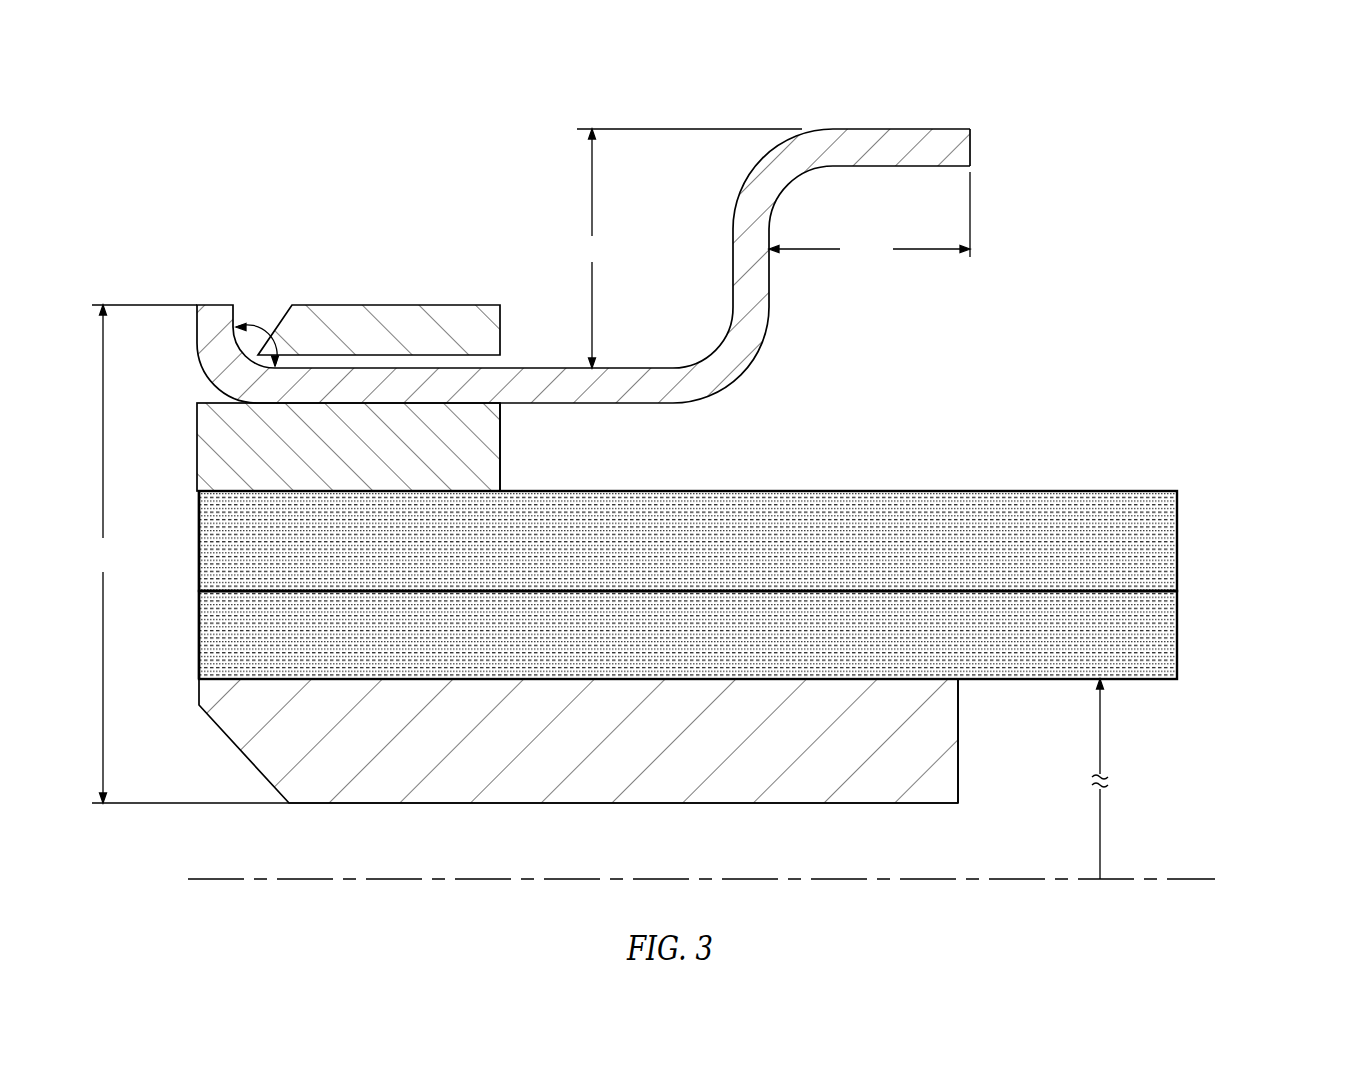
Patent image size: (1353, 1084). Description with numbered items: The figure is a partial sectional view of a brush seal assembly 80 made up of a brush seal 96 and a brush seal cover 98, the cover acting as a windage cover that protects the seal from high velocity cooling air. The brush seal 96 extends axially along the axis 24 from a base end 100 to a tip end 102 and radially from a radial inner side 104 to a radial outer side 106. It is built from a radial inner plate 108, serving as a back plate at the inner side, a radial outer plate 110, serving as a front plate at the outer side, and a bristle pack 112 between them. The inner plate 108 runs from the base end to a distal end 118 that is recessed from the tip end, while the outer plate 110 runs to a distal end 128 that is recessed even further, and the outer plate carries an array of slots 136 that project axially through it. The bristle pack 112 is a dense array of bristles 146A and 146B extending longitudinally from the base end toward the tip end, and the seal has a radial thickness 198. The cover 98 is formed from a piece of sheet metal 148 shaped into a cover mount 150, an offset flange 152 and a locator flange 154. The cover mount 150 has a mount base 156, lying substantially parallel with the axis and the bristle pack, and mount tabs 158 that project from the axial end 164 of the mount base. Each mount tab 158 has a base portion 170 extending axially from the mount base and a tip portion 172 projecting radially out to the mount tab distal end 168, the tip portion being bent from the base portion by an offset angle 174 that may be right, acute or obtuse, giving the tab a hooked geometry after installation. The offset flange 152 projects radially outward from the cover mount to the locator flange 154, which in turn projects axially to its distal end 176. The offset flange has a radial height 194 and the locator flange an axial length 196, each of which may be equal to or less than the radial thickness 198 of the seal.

The brush seal assembly 80 is at (1052, 92).
The axis 24 is at (285, 879).
The brush seal 96 is at (1030, 445).
The brush seal cover 98 is at (828, 123).
The base end 100 is at (197, 574).
The tip end 102 is at (1177, 598).
The radial inner side 104 is at (338, 803).
The radial outer side 106 is at (377, 303).
The radial inner plate 108 is at (523, 750).
The radial outer plate 110 is at (334, 460).
The bristle pack 112 is at (1250, 491).
The inner plate distal end 118 is at (958, 740).
The outer plate distal end 128 is at (500, 448).
The slot 136 is at (211, 390).
The brush seal bristle 146A is at (1152, 632).
The brush seal bristle 146B is at (884, 515).
The sheet metal 148 is at (738, 363).
The cover mount 150 is at (620, 347).
The offset flange 152 is at (748, 232).
The locator flange 154 is at (877, 138).
The mount base 156 is at (596, 392).
The mount tab 158 is at (448, 358).
The axial end of mount base 164 is at (497, 388).
The mount tab distal end 168 is at (213, 303).
The base portion 170 is at (397, 355).
The tip portion 172 is at (247, 317).
The offset angle 174 is at (258, 330).
The locator flange distal end 176 is at (970, 152).
The radial height 194 is at (688, 248).
The axial length 196 is at (869, 216).
The radial thickness 198 is at (187, 554).